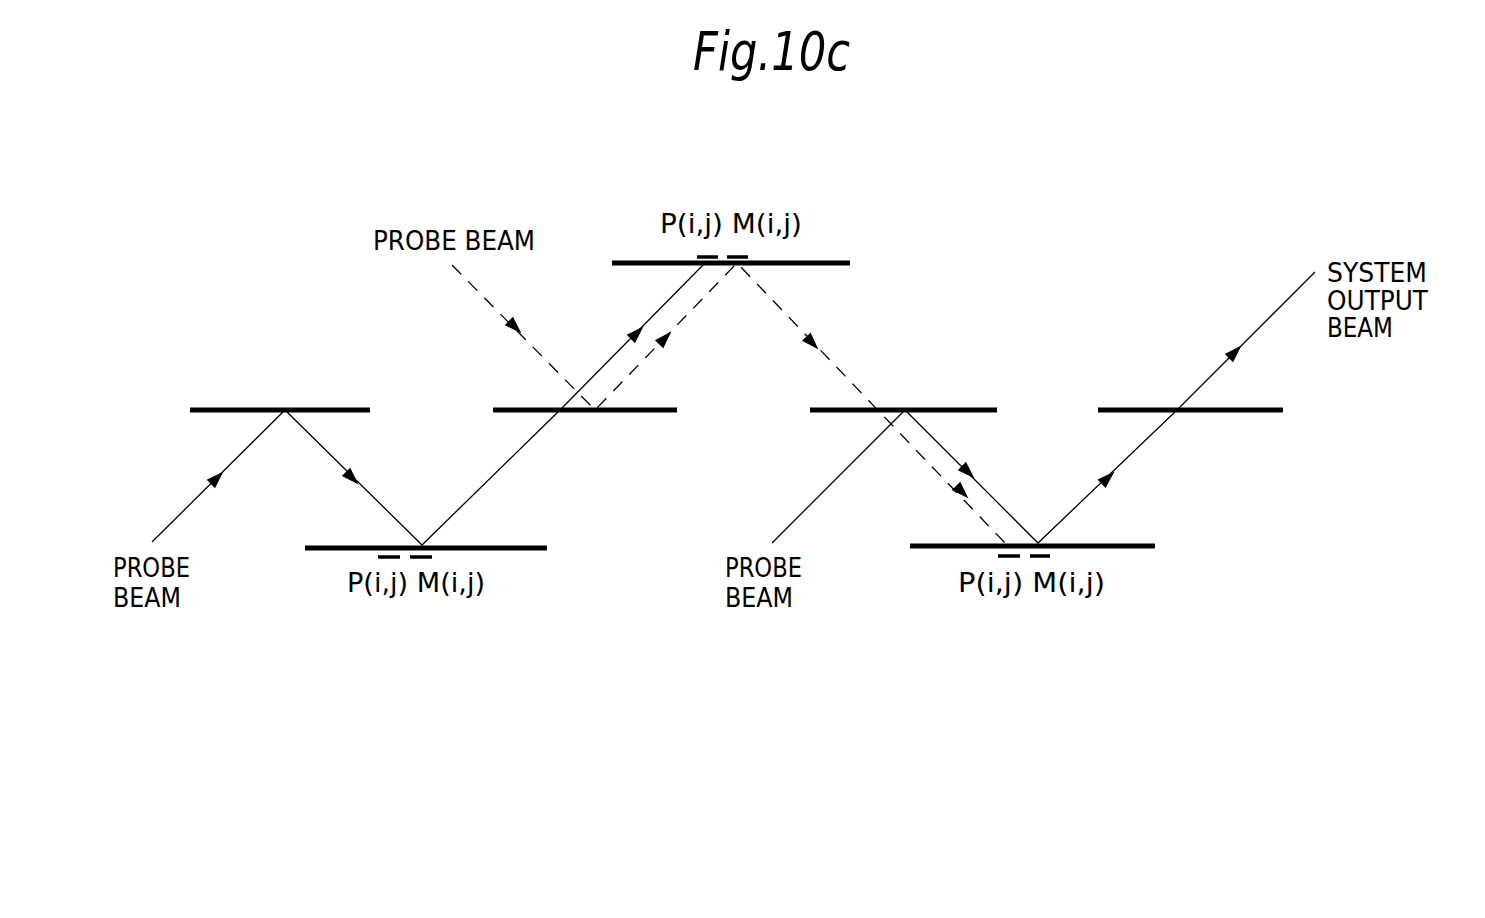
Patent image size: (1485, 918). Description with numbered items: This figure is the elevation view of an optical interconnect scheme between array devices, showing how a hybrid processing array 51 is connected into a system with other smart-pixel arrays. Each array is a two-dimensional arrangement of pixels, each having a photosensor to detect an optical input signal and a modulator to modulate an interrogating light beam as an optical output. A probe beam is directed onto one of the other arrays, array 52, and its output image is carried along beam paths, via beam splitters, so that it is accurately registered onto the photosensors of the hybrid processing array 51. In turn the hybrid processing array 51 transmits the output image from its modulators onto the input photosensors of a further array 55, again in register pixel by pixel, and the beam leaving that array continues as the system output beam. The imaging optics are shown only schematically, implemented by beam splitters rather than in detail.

The hybrid processing array 51 is at (828, 262).
The array 52 is at (520, 545).
The array 55 is at (1133, 545).